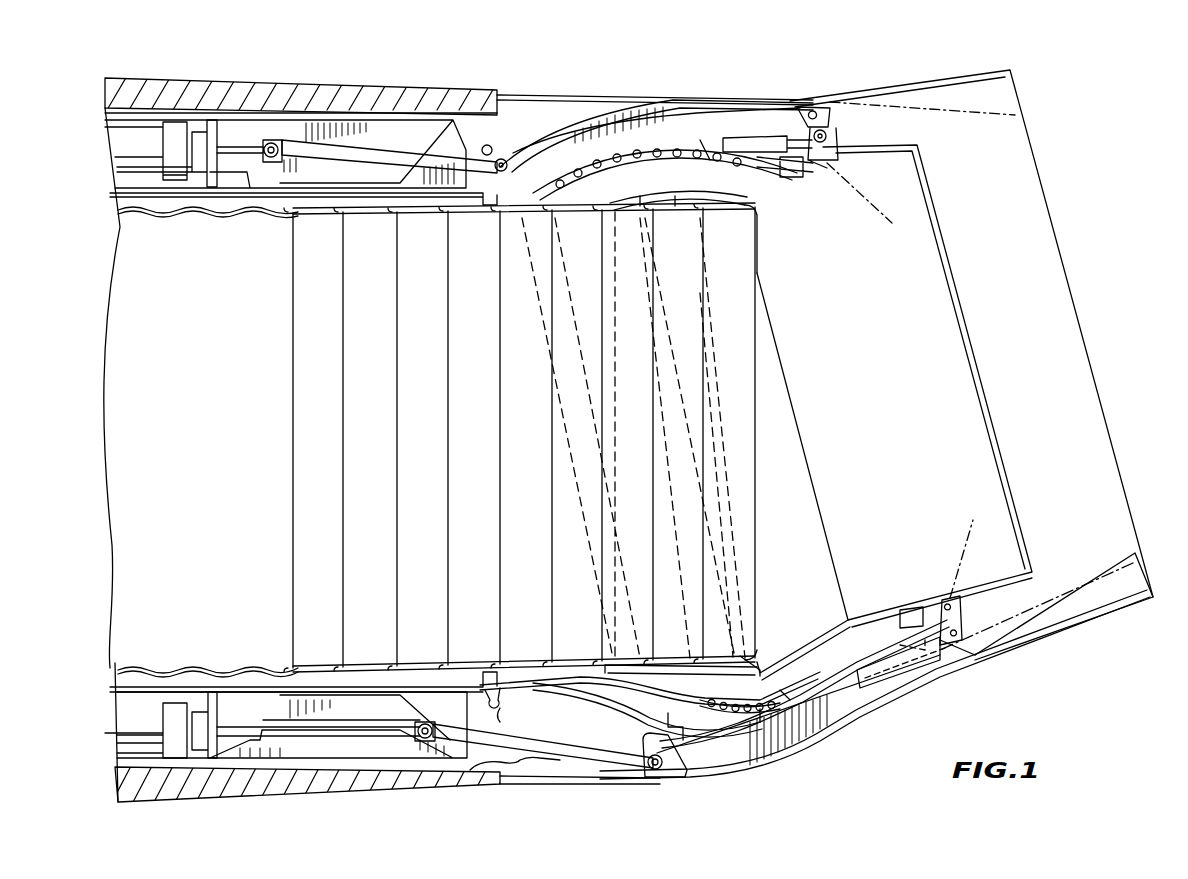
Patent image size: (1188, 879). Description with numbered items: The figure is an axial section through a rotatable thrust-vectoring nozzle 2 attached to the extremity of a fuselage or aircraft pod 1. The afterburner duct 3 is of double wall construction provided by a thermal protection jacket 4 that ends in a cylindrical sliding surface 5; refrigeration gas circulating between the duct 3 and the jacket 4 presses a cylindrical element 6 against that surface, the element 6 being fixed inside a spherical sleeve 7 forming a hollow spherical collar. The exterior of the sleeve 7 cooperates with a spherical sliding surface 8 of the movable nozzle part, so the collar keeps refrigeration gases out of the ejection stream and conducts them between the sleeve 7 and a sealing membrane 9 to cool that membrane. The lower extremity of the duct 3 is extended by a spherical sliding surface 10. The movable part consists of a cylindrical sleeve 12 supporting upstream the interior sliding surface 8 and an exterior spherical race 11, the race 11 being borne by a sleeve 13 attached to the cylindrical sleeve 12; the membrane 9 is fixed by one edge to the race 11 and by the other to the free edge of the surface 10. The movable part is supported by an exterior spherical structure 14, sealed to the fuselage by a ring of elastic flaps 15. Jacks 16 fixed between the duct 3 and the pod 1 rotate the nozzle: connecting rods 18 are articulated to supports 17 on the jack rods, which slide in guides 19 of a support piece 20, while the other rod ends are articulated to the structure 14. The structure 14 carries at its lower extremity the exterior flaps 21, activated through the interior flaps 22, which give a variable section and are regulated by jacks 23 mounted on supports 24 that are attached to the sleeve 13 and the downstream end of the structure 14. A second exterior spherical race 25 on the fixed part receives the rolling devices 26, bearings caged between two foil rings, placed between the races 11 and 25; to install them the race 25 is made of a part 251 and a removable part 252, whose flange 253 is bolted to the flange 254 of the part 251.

The fuselage or aircraft pod 1 is at (378, 90).
The rotatable thrust-vectoring nozzle 2 is at (771, 88).
The afterburner duct 3 is at (182, 198).
The thermal protection jacket 4 is at (232, 214).
The cylindrical sliding surface 5 is at (680, 218).
The cylindrical element 6 is at (736, 222).
The spherical sleeve 7 is at (682, 666).
The spherical sliding surface 8 is at (752, 658).
The sealing membrane 9 is at (710, 160).
The spherical sliding surface 10 is at (590, 676).
The exterior spherical race 11 is at (818, 655).
The cylindrical sleeve 12 is at (872, 612).
The sleeve 13 is at (912, 607).
The exterior spherical structure 14 is at (860, 720).
The elastic flaps 15 is at (660, 778).
The jacks 16 is at (125, 155).
The supports 17 is at (275, 140).
The connecting rods 18 is at (432, 160).
The guides 19 is at (392, 145).
The support piece 20 is at (326, 125).
The exterior flaps 21 is at (905, 88).
The interior flaps 22 is at (1015, 577).
The jacks 23 is at (920, 690).
The supports 24 is at (945, 665).
The exterior spherical race 25 is at (538, 695).
The part 251 is at (606, 710).
The removable part 252 is at (772, 755).
The flange 253 is at (690, 760).
The flange 254 is at (650, 770).
The rolling devices 26 is at (800, 725).